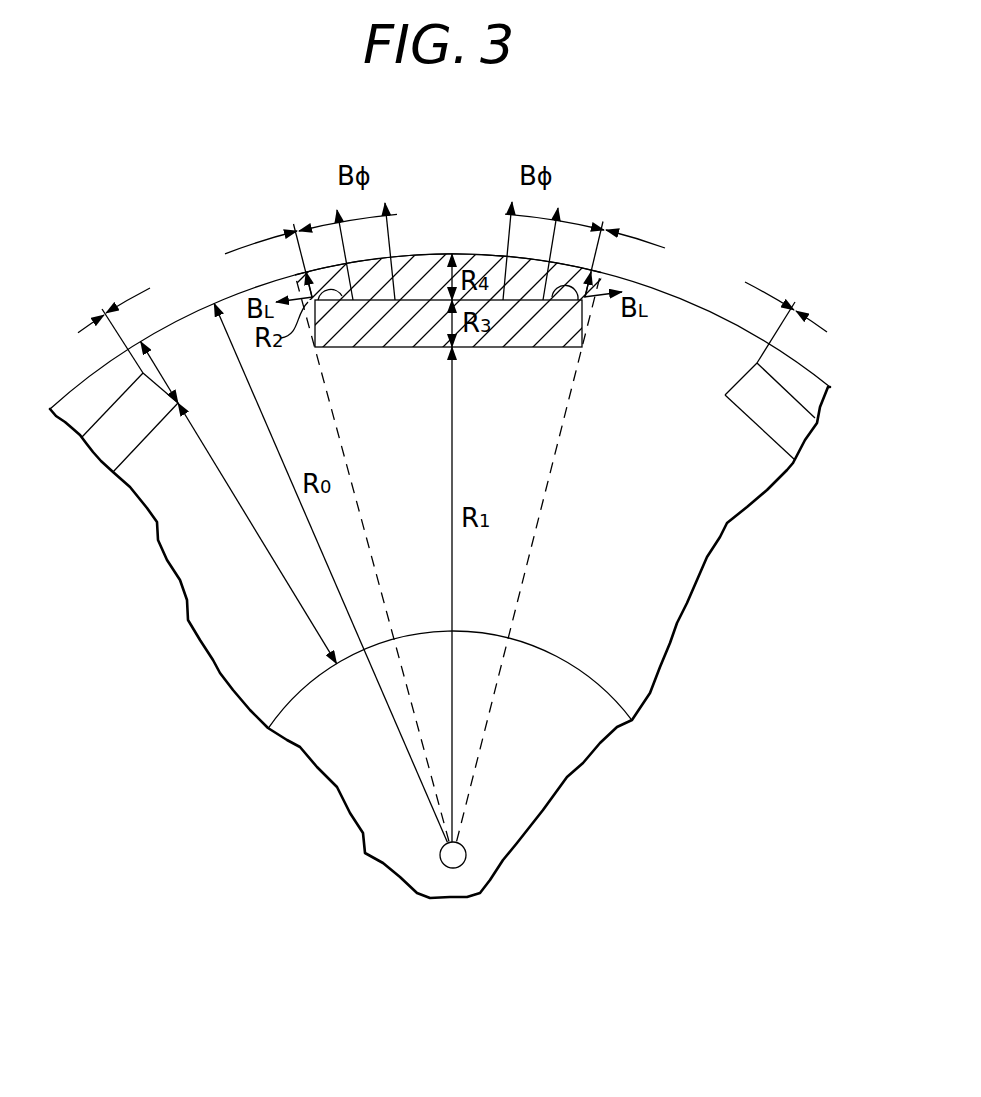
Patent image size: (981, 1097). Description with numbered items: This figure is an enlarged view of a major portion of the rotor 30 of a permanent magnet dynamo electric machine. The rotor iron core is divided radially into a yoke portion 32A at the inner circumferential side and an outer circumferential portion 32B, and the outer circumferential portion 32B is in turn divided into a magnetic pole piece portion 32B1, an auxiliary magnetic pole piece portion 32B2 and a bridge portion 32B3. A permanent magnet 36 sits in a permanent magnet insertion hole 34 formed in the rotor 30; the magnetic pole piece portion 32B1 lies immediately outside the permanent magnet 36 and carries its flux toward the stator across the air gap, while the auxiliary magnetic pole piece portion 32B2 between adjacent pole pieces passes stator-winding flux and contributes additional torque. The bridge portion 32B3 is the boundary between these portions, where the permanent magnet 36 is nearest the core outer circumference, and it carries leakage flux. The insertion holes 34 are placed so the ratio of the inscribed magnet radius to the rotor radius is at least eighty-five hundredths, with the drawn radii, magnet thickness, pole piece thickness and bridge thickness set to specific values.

The rotor 30 is at (768, 612).
The yoke portion 32A is at (405, 566).
The outer circumferential portion 32B is at (448, 407).
The magnetic pole piece portion 32B1 is at (461, 286).
The auxiliary magnetic pole piece portion 32B2 is at (448, 301).
The bridge portion 32B3 is at (293, 222).
The permanent magnet insertion hole 34 is at (523, 338).
The permanent magnet 36 is at (377, 338).